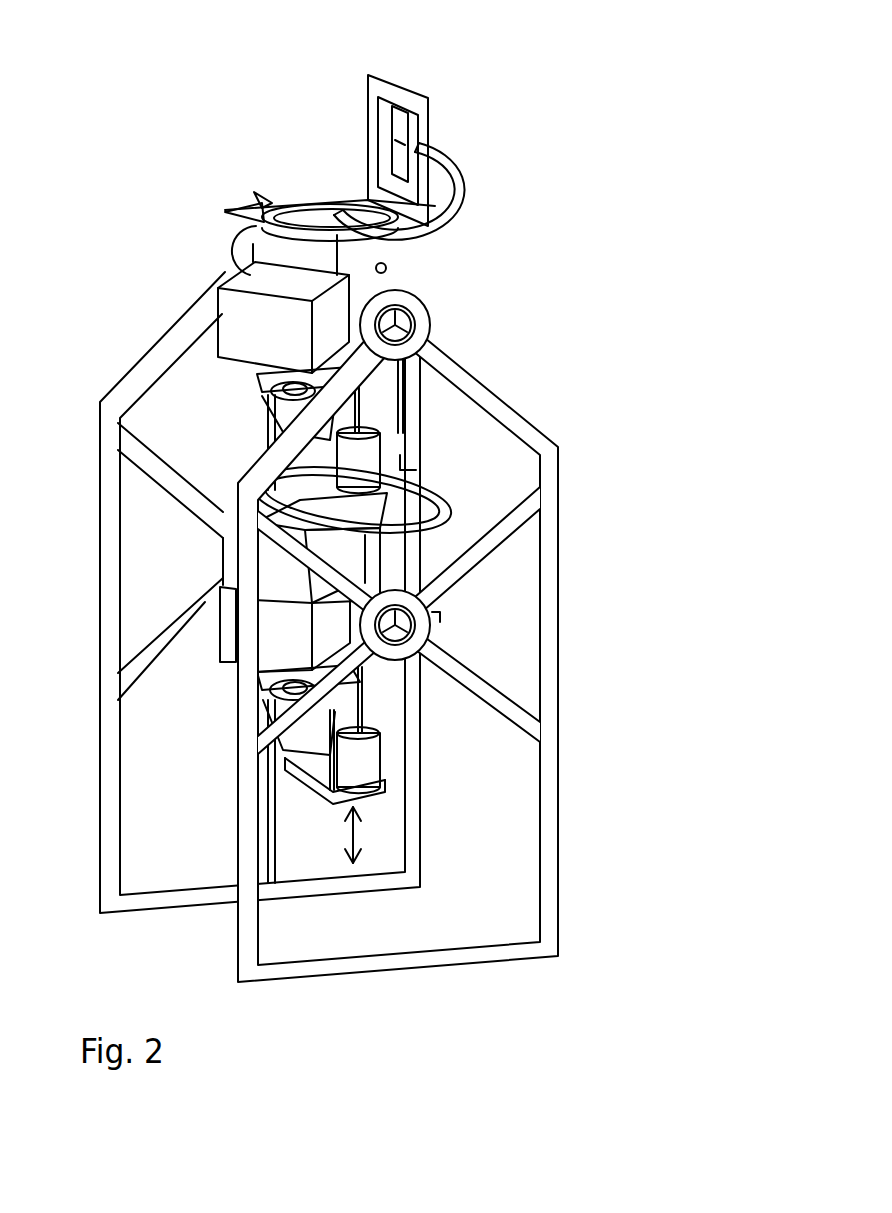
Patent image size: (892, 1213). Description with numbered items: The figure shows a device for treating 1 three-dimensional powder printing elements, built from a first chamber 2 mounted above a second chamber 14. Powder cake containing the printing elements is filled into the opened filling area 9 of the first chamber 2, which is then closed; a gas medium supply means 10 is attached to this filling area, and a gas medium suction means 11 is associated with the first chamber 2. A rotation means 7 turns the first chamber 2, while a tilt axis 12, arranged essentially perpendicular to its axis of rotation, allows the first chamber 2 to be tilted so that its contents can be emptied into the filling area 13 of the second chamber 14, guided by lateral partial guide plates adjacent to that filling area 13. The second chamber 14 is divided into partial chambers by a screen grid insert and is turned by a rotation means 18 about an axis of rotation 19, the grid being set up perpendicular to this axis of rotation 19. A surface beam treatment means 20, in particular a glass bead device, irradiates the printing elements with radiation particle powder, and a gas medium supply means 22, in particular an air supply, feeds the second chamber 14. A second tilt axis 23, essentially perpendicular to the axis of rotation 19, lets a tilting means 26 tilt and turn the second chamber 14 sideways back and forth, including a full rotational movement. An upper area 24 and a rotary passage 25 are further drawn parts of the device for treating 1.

The device for treating 1 is at (128, 118).
The first chamber 2 is at (133, 316).
The rotation means 7 is at (368, 453).
The filling area 9 is at (302, 132).
The gas medium supply means 10 is at (458, 155).
The gas medium suction means 11 is at (222, 248).
The tilt axis 12 is at (458, 325).
The filling area 13 is at (278, 495).
The second chamber 14 is at (220, 626).
The rotation means 18 is at (368, 760).
The axis of rotation 19 is at (340, 833).
The surface beam treatment means 20 is at (423, 487).
The gas medium supply means 22 is at (462, 503).
The tilt axis 23 is at (433, 630).
The upper area 24 is at (407, 467).
The rotary passage 25 is at (440, 617).
The tilting means 26 is at (430, 677).